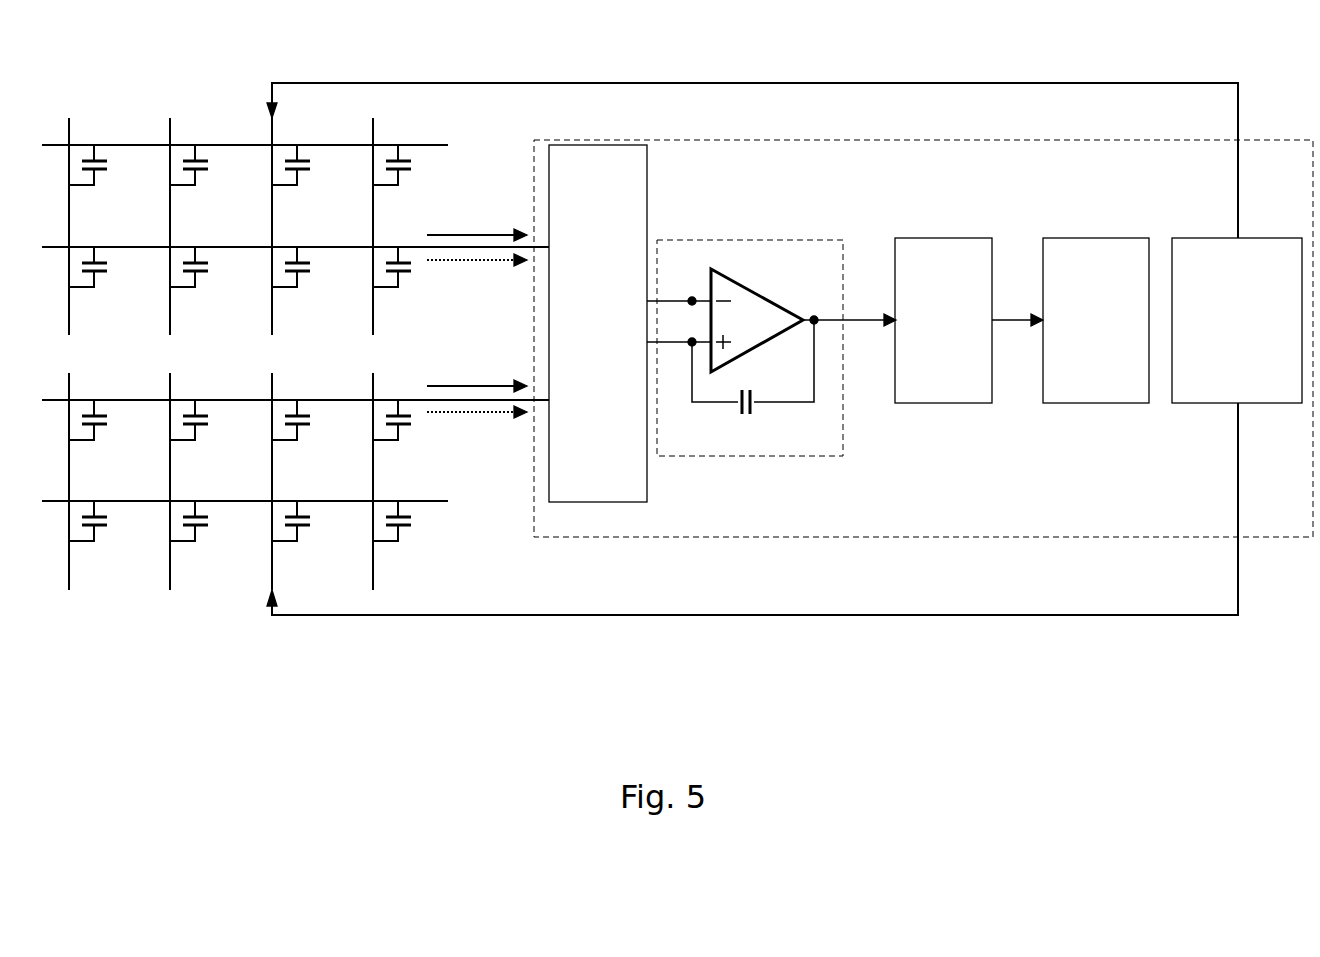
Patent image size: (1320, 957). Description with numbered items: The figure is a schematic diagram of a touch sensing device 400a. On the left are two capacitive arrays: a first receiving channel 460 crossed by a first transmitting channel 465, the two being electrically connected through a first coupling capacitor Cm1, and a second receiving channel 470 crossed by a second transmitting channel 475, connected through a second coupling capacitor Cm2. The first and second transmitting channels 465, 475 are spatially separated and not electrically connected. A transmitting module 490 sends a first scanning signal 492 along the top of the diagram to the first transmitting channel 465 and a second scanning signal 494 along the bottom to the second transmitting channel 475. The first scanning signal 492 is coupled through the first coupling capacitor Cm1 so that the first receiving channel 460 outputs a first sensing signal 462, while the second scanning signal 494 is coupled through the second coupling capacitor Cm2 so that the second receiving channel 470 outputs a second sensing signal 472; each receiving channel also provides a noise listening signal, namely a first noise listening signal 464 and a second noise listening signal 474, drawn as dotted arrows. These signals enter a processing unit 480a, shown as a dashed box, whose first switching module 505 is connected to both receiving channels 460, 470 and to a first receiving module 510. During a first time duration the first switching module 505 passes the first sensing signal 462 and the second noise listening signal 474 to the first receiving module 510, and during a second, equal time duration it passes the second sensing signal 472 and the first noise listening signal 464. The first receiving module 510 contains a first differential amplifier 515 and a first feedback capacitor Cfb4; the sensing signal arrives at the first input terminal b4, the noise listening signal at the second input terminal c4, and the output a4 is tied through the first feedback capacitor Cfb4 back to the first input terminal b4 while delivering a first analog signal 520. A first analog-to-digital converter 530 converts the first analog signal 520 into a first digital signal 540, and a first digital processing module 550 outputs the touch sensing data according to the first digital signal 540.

The touch sensing device 400a is at (932, 37).
The first receiving channel 460 is at (55, 247).
The second receiving channel 470 is at (55, 400).
The first transmitting channel 465 is at (273, 322).
The second transmitting channel 475 is at (273, 572).
The first sensing signal 462 is at (440, 235).
The first noise listening signal 464 is at (440, 260).
The second sensing signal 472 is at (440, 386).
The second noise listening signal 474 is at (440, 412).
The processing unit 480a is at (905, 140).
The first scanning signal 492 is at (490, 83).
The second scanning signal 494 is at (490, 615).
The first switching module 505 is at (598, 323).
The first receiving module 510 is at (765, 240).
The first differential amplifier 515 is at (735, 283).
The first analog signal 520 is at (852, 320).
The first analog-to-digital converter 530 is at (943, 320).
The first digital signal 540 is at (1003, 320).
The first digital processing module 550 is at (1096, 320).
The transmitting module 490 is at (1237, 320).
The first coupling capacitor Cm1 is at (315, 267).
The second coupling capacitor Cm2 is at (315, 420).
The first feedback capacitor Cfb4 is at (753, 380).
The second input terminal c4 is at (679, 290).
The first input terminal b4 is at (679, 353).
The output a4 is at (801, 307).